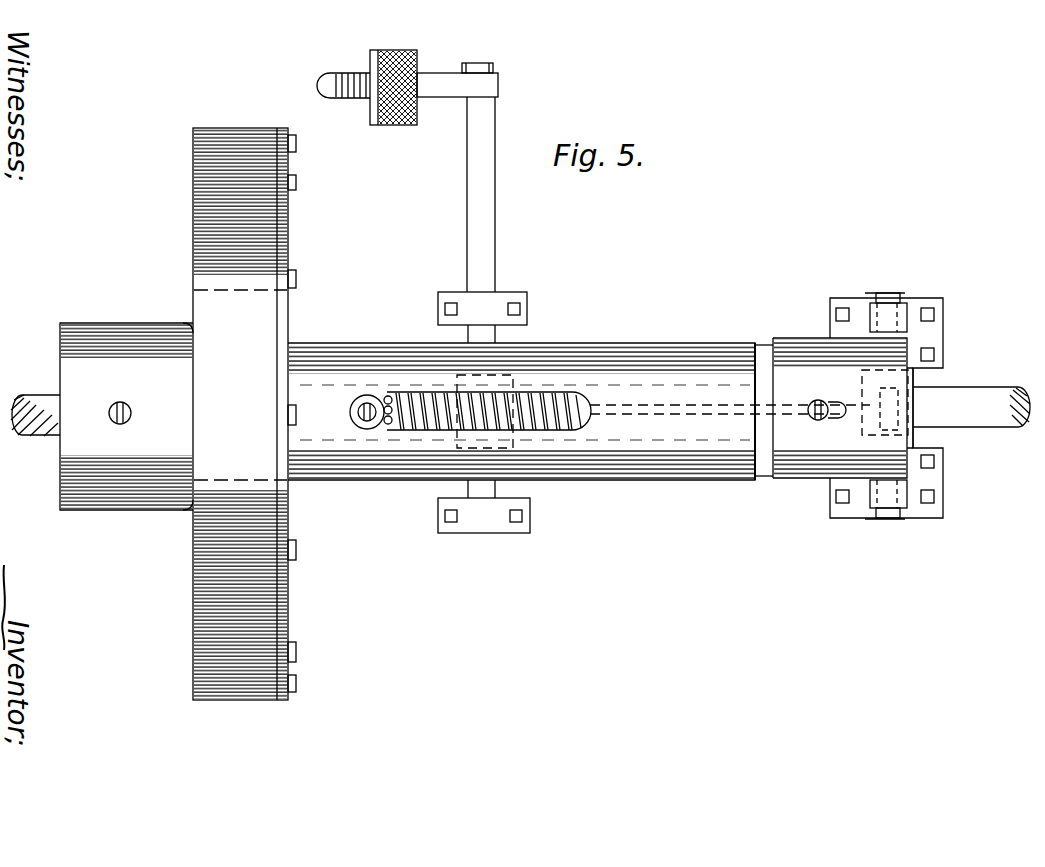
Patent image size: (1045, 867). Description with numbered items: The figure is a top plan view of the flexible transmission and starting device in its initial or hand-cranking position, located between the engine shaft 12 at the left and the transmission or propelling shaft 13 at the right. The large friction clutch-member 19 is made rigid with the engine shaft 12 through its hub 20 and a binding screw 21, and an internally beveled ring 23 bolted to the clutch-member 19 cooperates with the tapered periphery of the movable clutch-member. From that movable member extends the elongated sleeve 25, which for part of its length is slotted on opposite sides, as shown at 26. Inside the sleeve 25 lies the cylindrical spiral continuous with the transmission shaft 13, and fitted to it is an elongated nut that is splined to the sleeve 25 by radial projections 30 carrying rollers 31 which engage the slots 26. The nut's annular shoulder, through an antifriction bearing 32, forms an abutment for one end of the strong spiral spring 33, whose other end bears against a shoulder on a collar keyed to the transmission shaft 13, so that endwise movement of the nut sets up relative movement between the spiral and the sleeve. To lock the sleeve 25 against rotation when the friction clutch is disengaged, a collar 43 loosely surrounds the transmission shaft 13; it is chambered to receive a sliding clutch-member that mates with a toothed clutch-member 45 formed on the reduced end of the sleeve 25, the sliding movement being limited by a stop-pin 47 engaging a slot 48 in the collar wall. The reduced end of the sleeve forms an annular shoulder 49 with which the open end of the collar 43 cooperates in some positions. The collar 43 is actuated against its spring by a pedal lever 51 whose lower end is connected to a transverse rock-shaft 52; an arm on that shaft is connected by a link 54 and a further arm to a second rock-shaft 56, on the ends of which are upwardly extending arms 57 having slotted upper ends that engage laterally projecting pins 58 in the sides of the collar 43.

The engine shaft 12 is at (42, 432).
The transmission or propelling shaft 13 is at (990, 412).
The friction clutch-member 19 is at (190, 196).
The hub 20 is at (100, 325).
The binding screw 21 is at (131, 411).
The internally beveled ring 23 is at (290, 334).
The sleeve 25 is at (624, 360).
The slots 26 is at (416, 394).
The radial projections 30 is at (358, 413).
The rollers 31 is at (351, 403).
The antifriction bearing 32 is at (386, 398).
The spiral spring 33 is at (556, 394).
The collar 43 is at (800, 372).
The clutch-member 45 is at (762, 472).
The stop-pin 47 is at (809, 406).
The slot 48 is at (834, 403).
The annular shoulder 49 is at (757, 340).
The pedal lever 51 is at (360, 103).
The transverse rock-shaft 52 is at (470, 186).
The link 54 is at (678, 404).
The second rock-shaft 56 is at (912, 516).
The arms 57 is at (876, 310).
The pins 58 is at (890, 294).